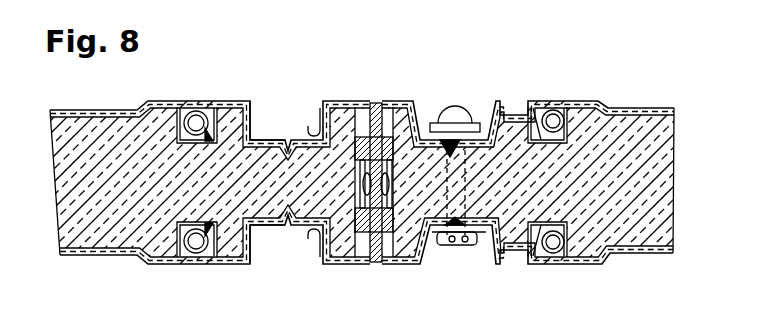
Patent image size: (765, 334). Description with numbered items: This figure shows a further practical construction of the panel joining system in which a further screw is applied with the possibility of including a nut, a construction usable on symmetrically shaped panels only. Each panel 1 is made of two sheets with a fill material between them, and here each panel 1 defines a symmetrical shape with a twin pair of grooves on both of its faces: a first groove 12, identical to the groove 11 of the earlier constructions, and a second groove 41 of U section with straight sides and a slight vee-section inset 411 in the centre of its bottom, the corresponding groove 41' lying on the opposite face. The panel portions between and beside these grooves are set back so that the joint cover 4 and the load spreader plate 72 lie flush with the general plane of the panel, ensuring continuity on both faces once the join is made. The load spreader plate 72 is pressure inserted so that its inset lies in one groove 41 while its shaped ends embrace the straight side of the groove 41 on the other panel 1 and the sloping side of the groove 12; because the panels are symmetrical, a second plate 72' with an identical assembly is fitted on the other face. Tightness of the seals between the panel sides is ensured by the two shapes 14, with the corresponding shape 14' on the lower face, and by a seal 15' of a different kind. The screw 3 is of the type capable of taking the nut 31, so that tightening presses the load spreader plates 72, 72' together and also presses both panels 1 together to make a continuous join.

The panel 1 is at (118, 130).
The means of fastening 3 is at (450, 190).
The joint cover 4 is at (219, 108).
The groove 11 is at (197, 250).
The first groove 12 is at (195, 120).
The shape 14 is at (372, 157).
The lower pin block 14' is at (370, 261).
The seal 15' is at (352, 237).
The nut 31 is at (458, 247).
The second groove 41 is at (267, 96).
The lower recess of cover sheet 41' is at (285, 270).
The inset 411 is at (290, 137).
The load spreader plate 72 is at (453, 105).
The second plate 72' is at (453, 266).